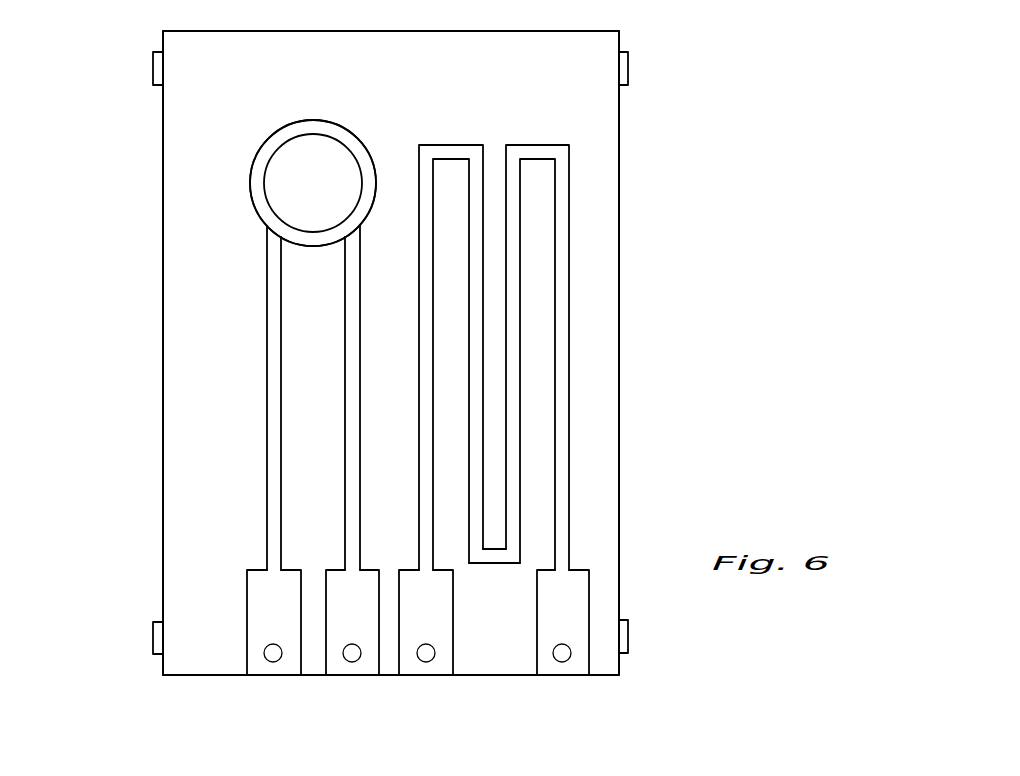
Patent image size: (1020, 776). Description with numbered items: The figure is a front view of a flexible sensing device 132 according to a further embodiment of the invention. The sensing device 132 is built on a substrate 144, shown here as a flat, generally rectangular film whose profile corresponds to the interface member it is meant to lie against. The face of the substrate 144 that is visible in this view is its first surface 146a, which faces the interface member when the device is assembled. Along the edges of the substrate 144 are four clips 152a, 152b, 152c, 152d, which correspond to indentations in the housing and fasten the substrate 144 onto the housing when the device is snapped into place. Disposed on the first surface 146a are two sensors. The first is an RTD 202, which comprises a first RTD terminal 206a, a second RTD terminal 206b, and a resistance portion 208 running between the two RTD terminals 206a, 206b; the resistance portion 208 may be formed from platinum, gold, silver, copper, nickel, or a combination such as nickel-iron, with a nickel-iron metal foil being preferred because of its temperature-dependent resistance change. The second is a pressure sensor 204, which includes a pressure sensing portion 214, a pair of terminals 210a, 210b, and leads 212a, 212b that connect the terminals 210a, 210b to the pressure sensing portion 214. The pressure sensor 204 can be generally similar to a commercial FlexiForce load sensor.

The sensing device 132 is at (706, 146).
The substrate 144 is at (620, 399).
The first surface 146a is at (172, 478).
The clip 152a is at (628, 640).
The clip 152b is at (628, 72).
The clip 152c is at (153, 640).
The clip 152d is at (153, 76).
The RTD 202 is at (483, 114).
The pressure sensor 204 is at (306, 110).
The first RTD terminal 206a is at (562, 662).
The second RTD terminal 206b is at (426, 662).
The resistance portion 208 is at (527, 569).
The terminal 210a is at (352, 662).
The terminal 210b is at (271, 662).
The lead 212a is at (357, 356).
The lead 212b is at (267, 436).
The pressure sensing portion 214 is at (250, 197).